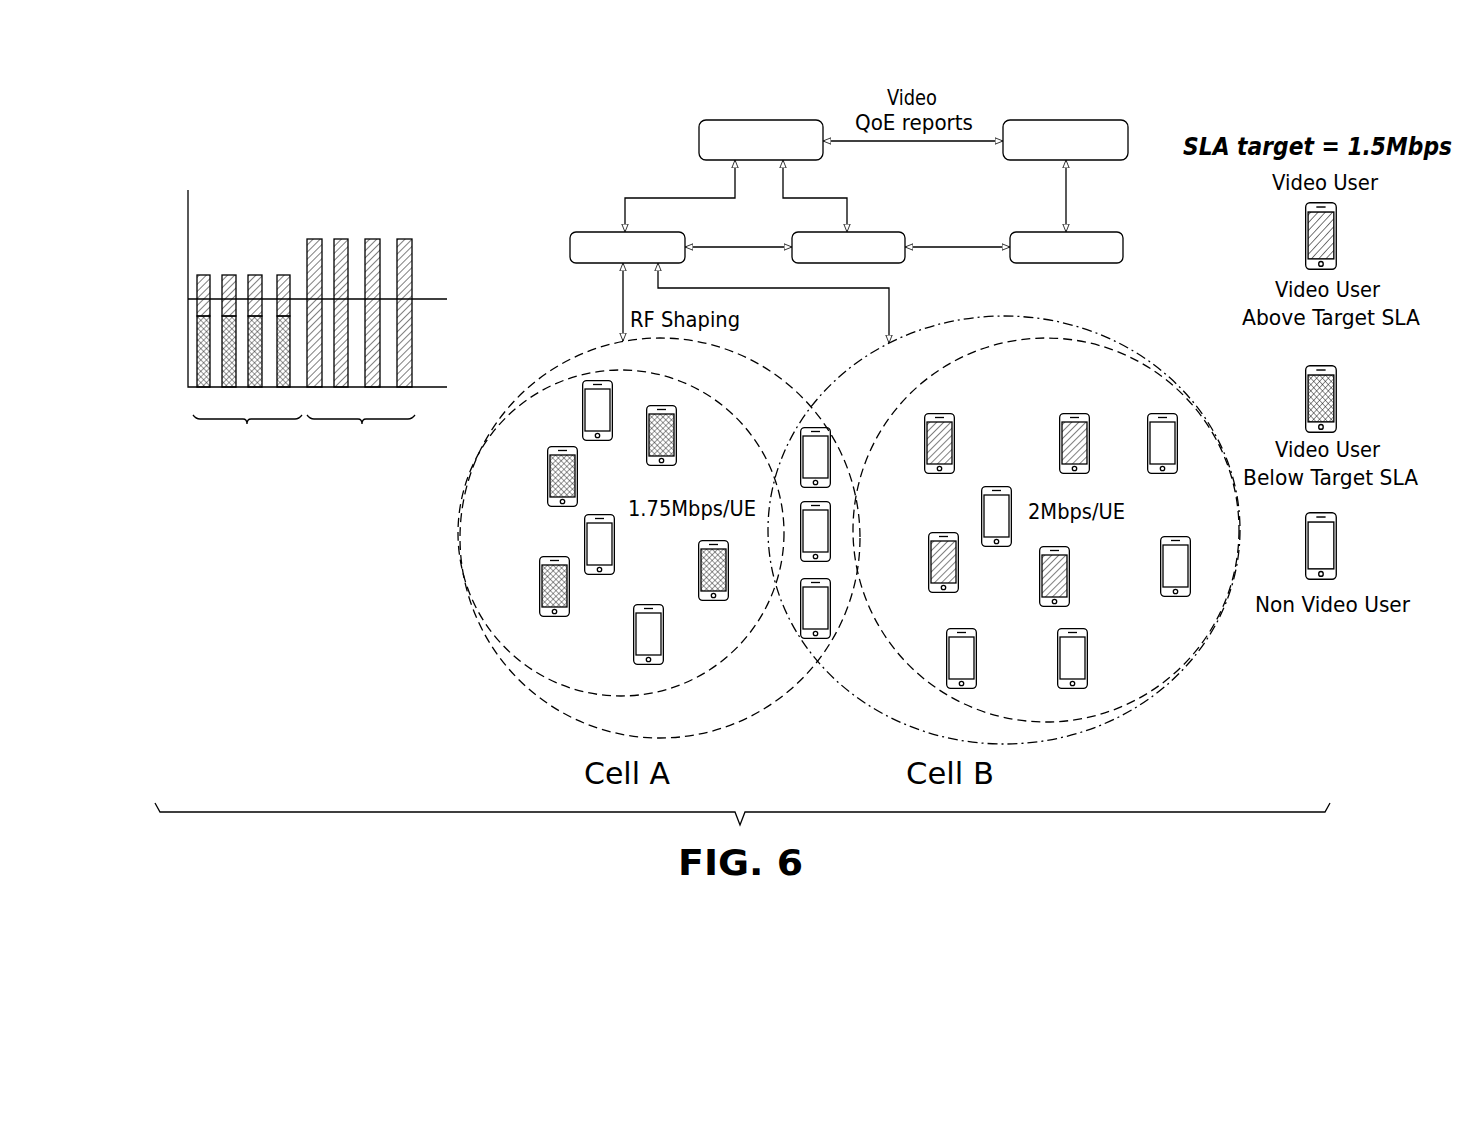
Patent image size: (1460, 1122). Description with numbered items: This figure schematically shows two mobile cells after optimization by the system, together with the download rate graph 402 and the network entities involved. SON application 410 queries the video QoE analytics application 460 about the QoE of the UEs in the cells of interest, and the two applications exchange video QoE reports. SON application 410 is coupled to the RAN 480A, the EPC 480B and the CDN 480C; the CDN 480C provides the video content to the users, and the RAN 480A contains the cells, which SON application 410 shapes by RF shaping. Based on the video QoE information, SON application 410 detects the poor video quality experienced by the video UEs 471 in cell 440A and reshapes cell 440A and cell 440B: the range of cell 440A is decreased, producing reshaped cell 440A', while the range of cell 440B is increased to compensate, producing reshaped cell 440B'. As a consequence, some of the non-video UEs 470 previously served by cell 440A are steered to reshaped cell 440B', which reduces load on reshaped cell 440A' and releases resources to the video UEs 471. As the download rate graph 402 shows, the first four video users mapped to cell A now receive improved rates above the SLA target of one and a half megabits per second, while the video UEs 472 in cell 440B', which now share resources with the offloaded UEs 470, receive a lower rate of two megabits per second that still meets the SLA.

The QoE bar chart of video users 402 is at (383, 228).
The SON (self-organizing network) 410 is at (722, 120).
The VQA (video quality analyzer) 460 is at (1050, 120).
The RAN (radio access network) 480A is at (590, 232).
The EPC (evolved packet core) 480B is at (893, 232).
The CDN (content delivery network) 480C is at (1112, 232).
The cell A coverage area 440A is at (604, 536).
The cell A reshaped coverage area 440A' is at (660, 557).
The cell B coverage area 440B is at (1046, 559).
The cell B reshaped coverage area 440B' is at (1004, 518).
The non-video user device 470 is at (824, 439).
The video user device below target SLA 471 is at (679, 437).
The video user device above target SLA 472 is at (955, 435).